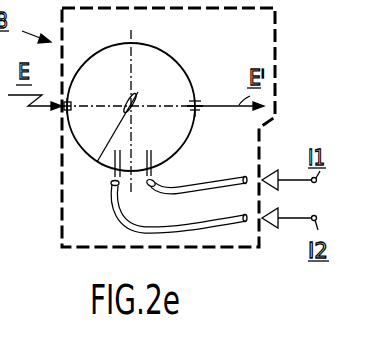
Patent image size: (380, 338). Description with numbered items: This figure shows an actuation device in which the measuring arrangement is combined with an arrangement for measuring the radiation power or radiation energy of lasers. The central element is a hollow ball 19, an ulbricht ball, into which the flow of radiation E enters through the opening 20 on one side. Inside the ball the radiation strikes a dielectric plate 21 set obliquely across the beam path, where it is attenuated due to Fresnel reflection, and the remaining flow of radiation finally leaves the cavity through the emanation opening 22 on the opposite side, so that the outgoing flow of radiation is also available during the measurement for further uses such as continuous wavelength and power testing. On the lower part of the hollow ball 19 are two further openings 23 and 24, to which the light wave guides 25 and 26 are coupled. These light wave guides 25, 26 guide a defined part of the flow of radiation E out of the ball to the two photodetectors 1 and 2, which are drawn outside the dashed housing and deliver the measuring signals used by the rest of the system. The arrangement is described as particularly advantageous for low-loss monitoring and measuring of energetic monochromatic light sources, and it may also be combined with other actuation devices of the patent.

The photodetector 1 is at (270, 172).
The photodetector 2 is at (270, 228).
The hollow ball 19 is at (167, 52).
The opening 20 is at (72, 104).
The dielectric plate 21 is at (139, 94).
The emanation opening 22 is at (197, 104).
The opening 23 is at (118, 158).
The opening 24 is at (147, 156).
The light wave guide 25 is at (206, 180).
The light wave guide 26 is at (117, 215).